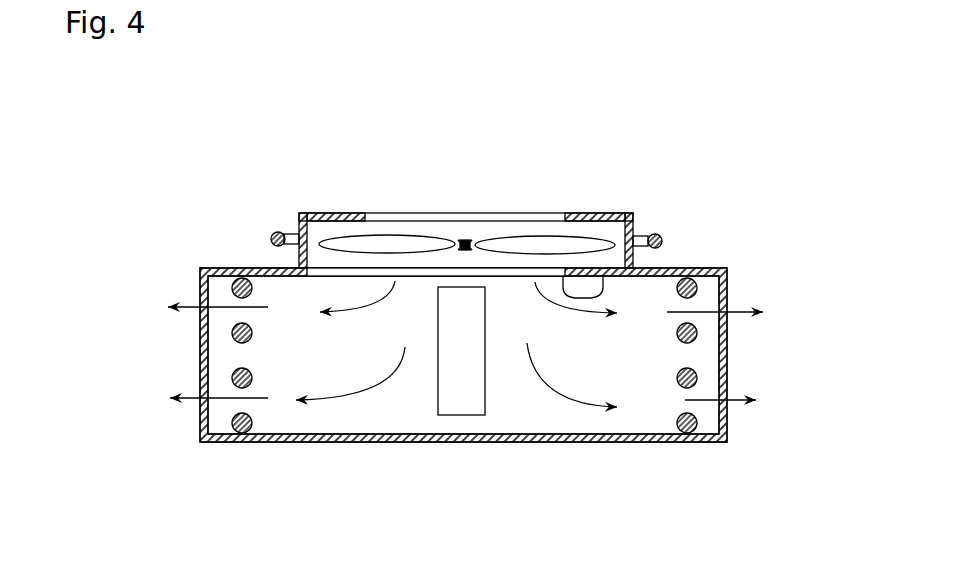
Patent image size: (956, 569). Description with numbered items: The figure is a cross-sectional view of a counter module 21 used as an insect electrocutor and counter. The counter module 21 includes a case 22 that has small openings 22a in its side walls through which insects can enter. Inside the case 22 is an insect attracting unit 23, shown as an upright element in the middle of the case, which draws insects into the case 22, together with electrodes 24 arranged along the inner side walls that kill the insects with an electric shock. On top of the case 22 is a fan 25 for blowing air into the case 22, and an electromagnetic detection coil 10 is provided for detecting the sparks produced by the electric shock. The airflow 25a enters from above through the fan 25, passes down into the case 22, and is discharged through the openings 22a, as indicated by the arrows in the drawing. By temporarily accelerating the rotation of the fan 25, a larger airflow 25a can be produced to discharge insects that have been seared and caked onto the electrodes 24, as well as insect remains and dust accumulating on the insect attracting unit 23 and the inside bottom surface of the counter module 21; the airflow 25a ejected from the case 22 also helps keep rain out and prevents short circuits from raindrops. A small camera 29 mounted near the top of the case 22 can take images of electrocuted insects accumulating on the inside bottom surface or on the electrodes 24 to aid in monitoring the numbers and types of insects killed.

The electromagnetic detection coil 10 is at (654, 236).
The counter module 21 is at (576, 190).
The case 22 is at (200, 345).
The small openings 22a is at (195, 300).
The insect attracting unit 23 is at (458, 392).
The electrodes 24 is at (697, 378).
The fan 25 is at (350, 240).
The airflow 25a is at (387, 197).
The small camera 29 is at (600, 296).